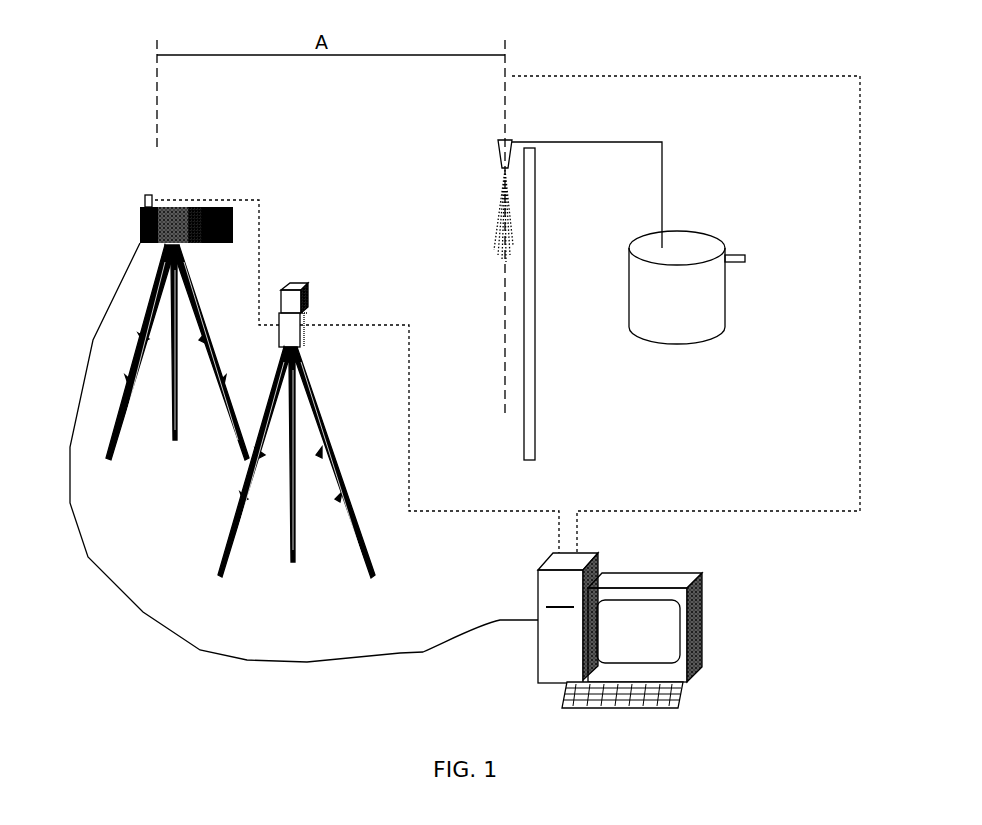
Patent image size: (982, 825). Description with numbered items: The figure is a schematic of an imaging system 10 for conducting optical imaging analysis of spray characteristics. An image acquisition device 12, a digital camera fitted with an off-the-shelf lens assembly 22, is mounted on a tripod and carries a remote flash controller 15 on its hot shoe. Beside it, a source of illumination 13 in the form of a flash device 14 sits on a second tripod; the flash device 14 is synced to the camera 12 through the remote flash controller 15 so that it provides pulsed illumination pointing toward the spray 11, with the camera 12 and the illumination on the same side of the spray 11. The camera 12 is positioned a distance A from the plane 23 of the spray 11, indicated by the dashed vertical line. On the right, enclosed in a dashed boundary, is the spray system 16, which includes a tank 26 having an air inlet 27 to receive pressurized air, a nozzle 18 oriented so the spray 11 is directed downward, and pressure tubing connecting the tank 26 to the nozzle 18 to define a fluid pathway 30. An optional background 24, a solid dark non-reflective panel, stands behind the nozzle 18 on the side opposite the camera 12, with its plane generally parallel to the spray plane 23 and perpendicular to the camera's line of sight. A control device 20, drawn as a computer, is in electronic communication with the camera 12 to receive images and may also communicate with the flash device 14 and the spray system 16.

The imaging system 10 is at (114, 151).
The spray 11 is at (496, 243).
The image acquisition device 12 is at (142, 232).
The source of illumination 13 is at (297, 260).
The flash device 14 is at (308, 298).
The remote flash controller 15 is at (153, 196).
The spray system 16 is at (731, 152).
The nozzle 18 is at (498, 148).
The control device 20 is at (743, 644).
The lens assembly 22 is at (190, 209).
The plane of the spray 23 is at (505, 370).
The background 24 is at (535, 407).
The tank 26 is at (725, 297).
The air inlet 27 is at (745, 258).
The fluid pathway 30 is at (584, 130).